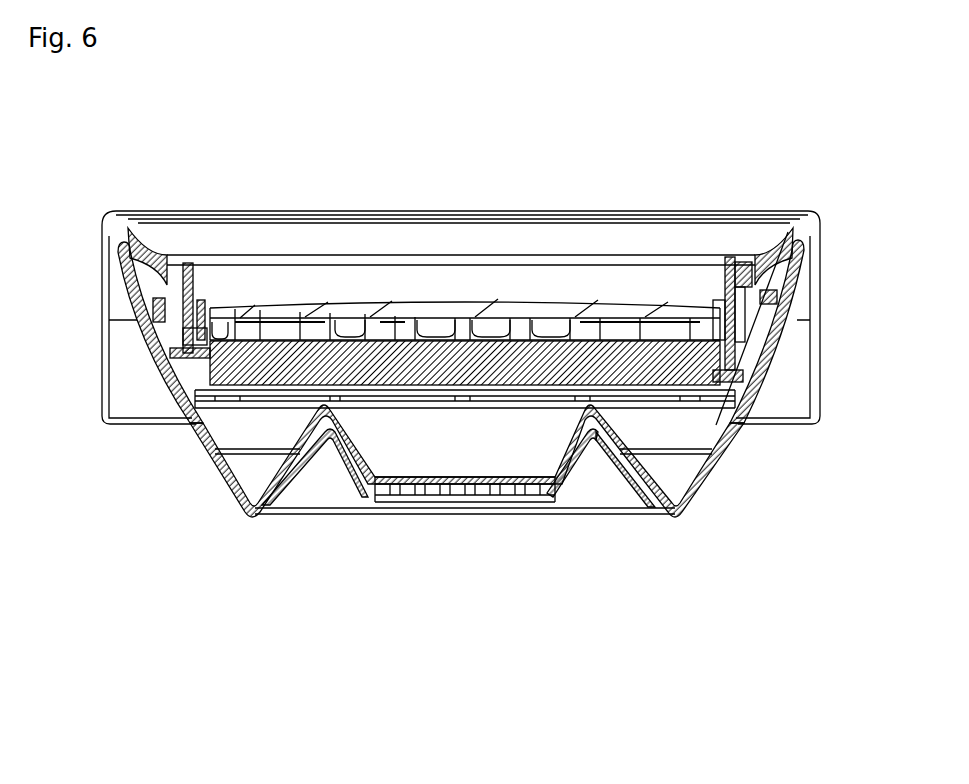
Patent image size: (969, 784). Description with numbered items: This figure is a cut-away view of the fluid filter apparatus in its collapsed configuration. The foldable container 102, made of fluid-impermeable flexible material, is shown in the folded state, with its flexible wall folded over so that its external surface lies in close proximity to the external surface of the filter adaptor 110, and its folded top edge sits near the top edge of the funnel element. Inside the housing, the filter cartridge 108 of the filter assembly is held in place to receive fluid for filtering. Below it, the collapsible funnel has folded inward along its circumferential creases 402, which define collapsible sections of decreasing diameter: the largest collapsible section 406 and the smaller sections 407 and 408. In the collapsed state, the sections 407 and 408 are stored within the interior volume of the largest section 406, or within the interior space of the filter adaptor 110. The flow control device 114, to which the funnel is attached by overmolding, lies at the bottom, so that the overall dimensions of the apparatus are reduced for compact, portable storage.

The foldable container 102 is at (92, 352).
The filter cartridge 108 is at (273, 362).
The filter adaptor 110 is at (162, 398).
The flow control device 114 is at (425, 508).
The circumferential creases 402 is at (492, 544).
The largest collapsible section 406 is at (712, 485).
The collapsible section 407 is at (640, 490).
The bottommost collapsible section 408 is at (567, 483).